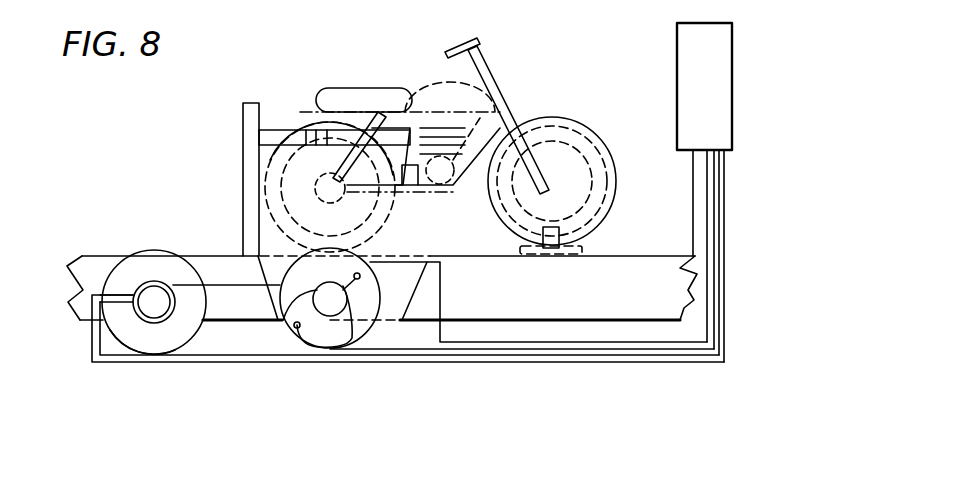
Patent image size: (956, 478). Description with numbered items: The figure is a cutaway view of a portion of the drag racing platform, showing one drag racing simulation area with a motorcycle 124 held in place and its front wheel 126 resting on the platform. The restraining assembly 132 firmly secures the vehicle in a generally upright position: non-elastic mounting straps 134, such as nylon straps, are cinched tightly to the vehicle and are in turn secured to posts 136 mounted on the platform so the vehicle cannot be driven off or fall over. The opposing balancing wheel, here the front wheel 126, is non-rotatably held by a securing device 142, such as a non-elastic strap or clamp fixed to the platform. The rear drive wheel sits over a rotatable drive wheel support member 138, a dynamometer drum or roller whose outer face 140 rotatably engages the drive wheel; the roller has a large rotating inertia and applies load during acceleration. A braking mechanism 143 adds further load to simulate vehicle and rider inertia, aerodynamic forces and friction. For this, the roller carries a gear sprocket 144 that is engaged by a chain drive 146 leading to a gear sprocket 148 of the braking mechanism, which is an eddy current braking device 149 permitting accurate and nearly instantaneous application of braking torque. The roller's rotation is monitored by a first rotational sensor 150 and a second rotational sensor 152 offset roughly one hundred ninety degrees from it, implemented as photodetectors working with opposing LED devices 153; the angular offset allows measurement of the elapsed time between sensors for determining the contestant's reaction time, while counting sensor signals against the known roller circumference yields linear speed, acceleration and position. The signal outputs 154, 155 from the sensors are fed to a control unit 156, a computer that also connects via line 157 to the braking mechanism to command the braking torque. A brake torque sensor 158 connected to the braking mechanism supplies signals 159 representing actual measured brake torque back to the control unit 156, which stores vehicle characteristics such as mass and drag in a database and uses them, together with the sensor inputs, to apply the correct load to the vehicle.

The motorcycle 124 is at (383, 197).
The front wheel 126 is at (551, 145).
The restraining assembly 132 is at (240, 136).
The non-elastic mounting straps 134 is at (268, 130).
The posts 136 is at (251, 103).
The rotatable drive wheel support member 138 is at (377, 327).
The outer face 140 is at (358, 256).
The securing device 142 is at (551, 242).
The braking mechanism 143 is at (127, 256).
The gear sprocket 144 is at (282, 323).
The chain drive 146 is at (210, 285).
The gear sprocket 148 is at (170, 312).
The eddy current braking device 149 is at (138, 337).
The first rotational sensor 150 is at (357, 276).
The second rotational sensor 152 is at (297, 328).
The LED devices 153 is at (340, 310).
The signal output 154 is at (443, 328).
The signal output 155 is at (433, 353).
The control unit 156 is at (732, 50).
The line 157 is at (92, 352).
The brake torque sensor 158 is at (155, 283).
The signals 159 is at (133, 358).